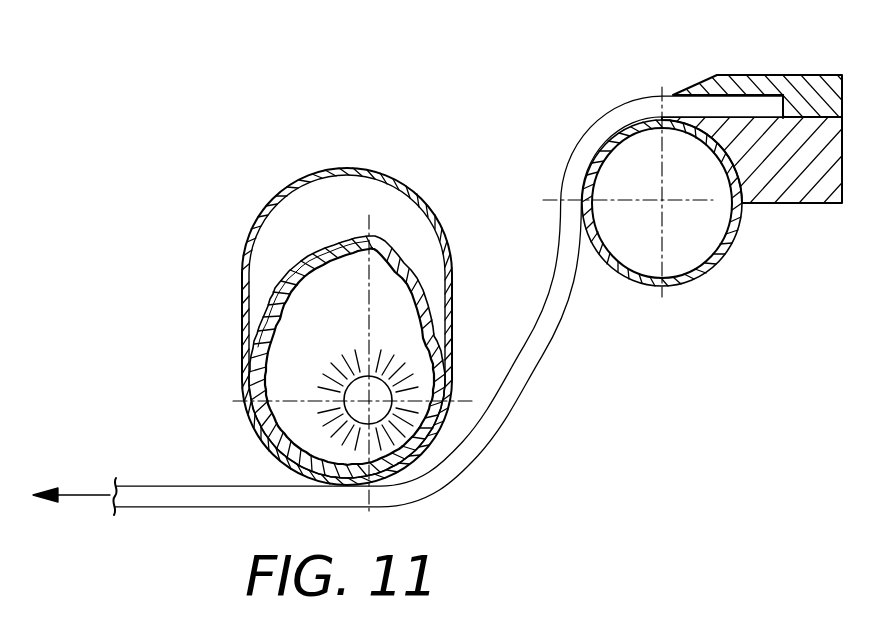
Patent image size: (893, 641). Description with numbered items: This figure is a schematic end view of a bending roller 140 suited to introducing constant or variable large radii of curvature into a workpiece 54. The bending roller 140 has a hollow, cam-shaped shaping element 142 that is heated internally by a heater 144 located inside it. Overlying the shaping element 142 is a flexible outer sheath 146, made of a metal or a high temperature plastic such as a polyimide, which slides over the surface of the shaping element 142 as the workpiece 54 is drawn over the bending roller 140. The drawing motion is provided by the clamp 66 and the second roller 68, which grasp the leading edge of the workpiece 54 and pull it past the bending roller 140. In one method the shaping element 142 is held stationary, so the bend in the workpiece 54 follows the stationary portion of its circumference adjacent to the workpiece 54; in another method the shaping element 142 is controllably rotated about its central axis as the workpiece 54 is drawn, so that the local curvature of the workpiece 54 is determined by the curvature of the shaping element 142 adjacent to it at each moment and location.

The workpiece 54 is at (531, 371).
The clamp 66 is at (753, 75).
The second roller 68 is at (637, 281).
The bending roller 140 is at (258, 448).
The shaping element 142 is at (250, 362).
The heater 144 is at (346, 376).
The flexible outer sheath 146 is at (446, 236).